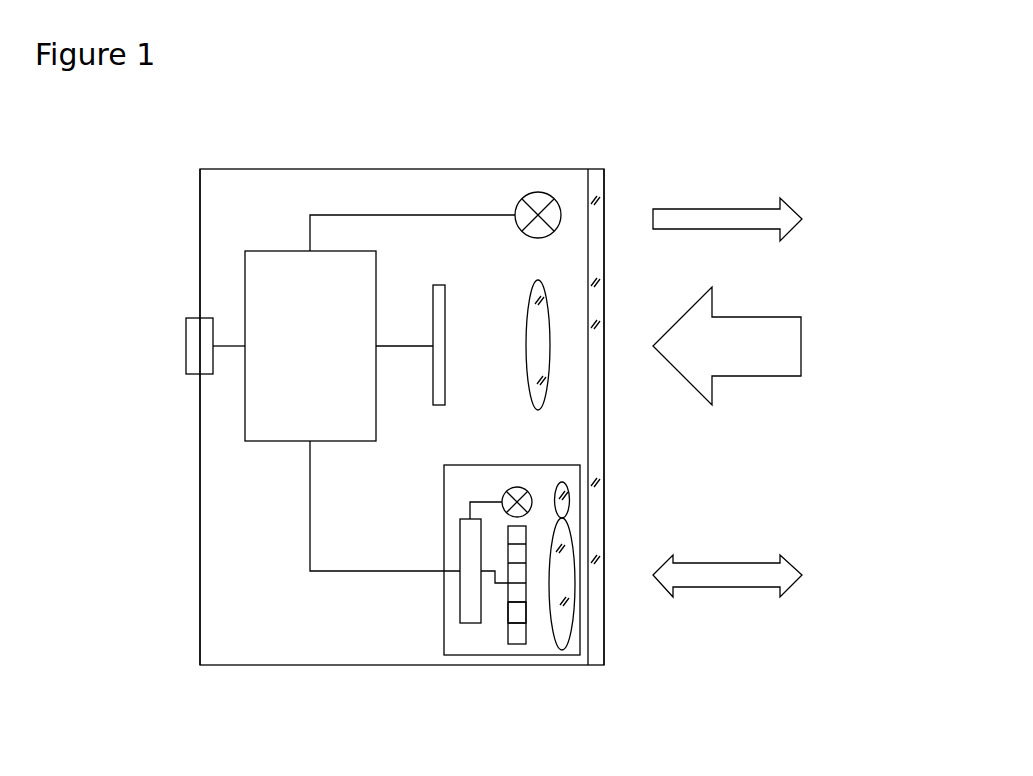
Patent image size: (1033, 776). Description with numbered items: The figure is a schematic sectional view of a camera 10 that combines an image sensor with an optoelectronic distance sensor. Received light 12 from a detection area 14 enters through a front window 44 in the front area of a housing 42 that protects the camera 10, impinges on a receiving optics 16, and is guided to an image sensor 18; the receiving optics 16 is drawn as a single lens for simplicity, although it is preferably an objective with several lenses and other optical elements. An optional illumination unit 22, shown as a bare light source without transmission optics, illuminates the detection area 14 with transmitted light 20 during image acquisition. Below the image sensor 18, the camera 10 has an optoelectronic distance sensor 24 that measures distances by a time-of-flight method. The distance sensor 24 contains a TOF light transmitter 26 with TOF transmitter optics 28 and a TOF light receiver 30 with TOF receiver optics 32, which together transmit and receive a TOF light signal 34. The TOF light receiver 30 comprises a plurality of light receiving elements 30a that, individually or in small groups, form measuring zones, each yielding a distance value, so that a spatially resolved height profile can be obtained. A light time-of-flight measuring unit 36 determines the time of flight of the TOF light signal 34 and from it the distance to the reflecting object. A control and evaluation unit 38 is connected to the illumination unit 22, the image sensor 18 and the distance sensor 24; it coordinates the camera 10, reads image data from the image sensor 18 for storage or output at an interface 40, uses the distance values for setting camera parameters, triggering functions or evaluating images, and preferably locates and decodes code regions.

The camera 10 is at (603, 88).
The received light 12 is at (745, 358).
The detection area 14 is at (908, 128).
The receiving optics 16 is at (533, 342).
The image sensor 18 is at (445, 323).
The transmitted light 20 is at (693, 215).
The illumination unit 22 is at (537, 205).
The optoelectronic distance sensor 24 is at (440, 620).
The TOF light transmitter 26 is at (508, 487).
The TOF transmitter optics 28 is at (570, 503).
The TOF light receiver 30 is at (527, 644).
The light receiving elements 30a is at (517, 613).
The TOF receiver optics 32 is at (568, 588).
The TOF light signal 34 is at (768, 576).
The light time-of-flight measuring unit 36 is at (468, 555).
The control and evaluation unit 38 is at (272, 421).
The interface 40 is at (197, 347).
The housing 42 is at (200, 491).
The front window 44 is at (601, 245).